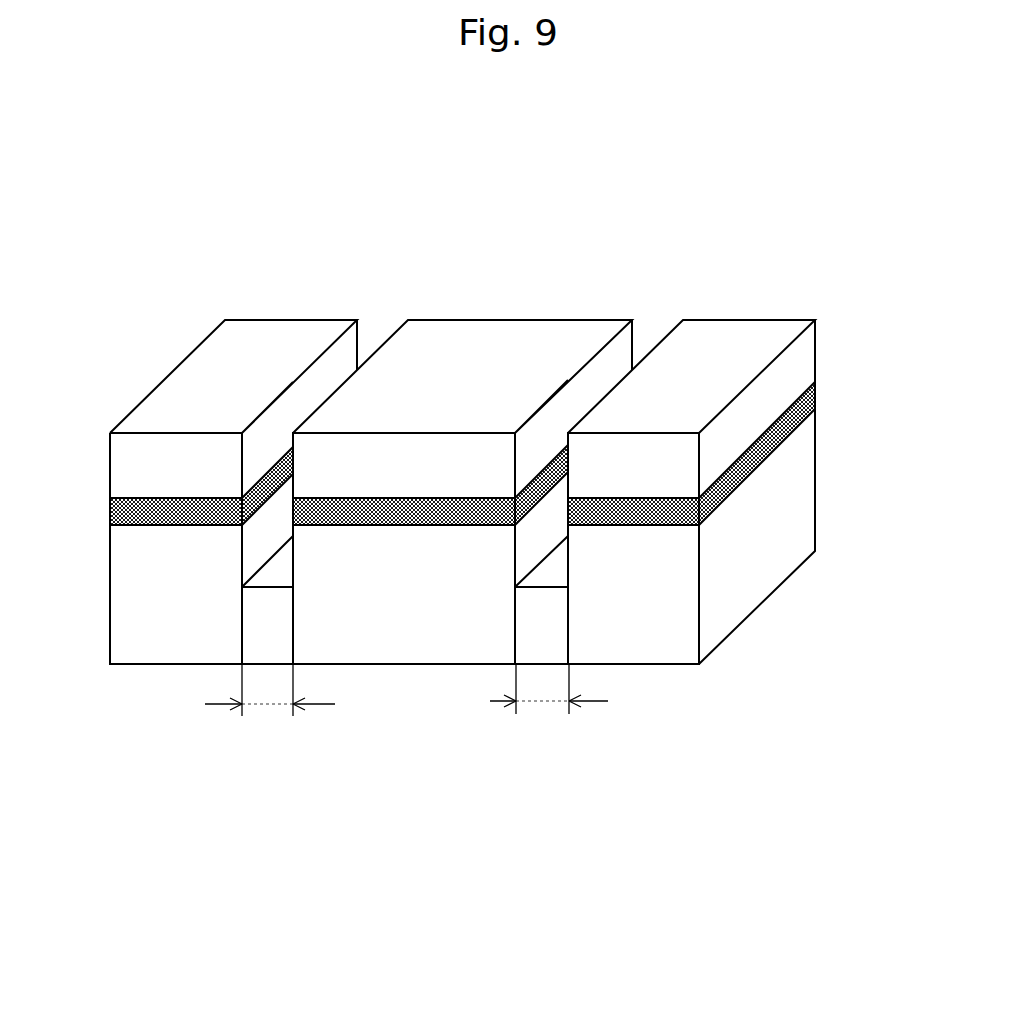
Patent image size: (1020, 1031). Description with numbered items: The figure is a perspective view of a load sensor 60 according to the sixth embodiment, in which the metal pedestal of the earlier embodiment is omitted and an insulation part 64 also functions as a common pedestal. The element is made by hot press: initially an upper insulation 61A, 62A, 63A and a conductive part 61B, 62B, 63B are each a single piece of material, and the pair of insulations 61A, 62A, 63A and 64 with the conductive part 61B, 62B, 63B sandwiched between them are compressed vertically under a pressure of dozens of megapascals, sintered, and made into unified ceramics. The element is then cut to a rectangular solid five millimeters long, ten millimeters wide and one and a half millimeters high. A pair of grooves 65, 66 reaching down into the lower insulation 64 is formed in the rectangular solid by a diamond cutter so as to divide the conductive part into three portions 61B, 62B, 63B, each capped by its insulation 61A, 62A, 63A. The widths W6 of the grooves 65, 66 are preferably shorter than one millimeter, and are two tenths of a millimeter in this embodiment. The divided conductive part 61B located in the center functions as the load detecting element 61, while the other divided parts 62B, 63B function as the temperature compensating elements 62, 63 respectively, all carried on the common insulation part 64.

The load sensor 60 is at (195, 237).
The load detecting element 61 is at (498, 332).
The insulation 61A is at (370, 475).
The conductive part 61B is at (383, 510).
The temperature compensating element 62 is at (268, 334).
The insulation 62A is at (135, 468).
The conductive part 62B is at (158, 518).
The temperature compensating element 63 is at (718, 330).
The insulation 63A is at (798, 357).
The conductive part 63B is at (798, 416).
The insulation part 64 is at (672, 642).
The groove 65 is at (371, 338).
The groove 66 is at (646, 340).
The width of the grooves W6 is at (406, 709).